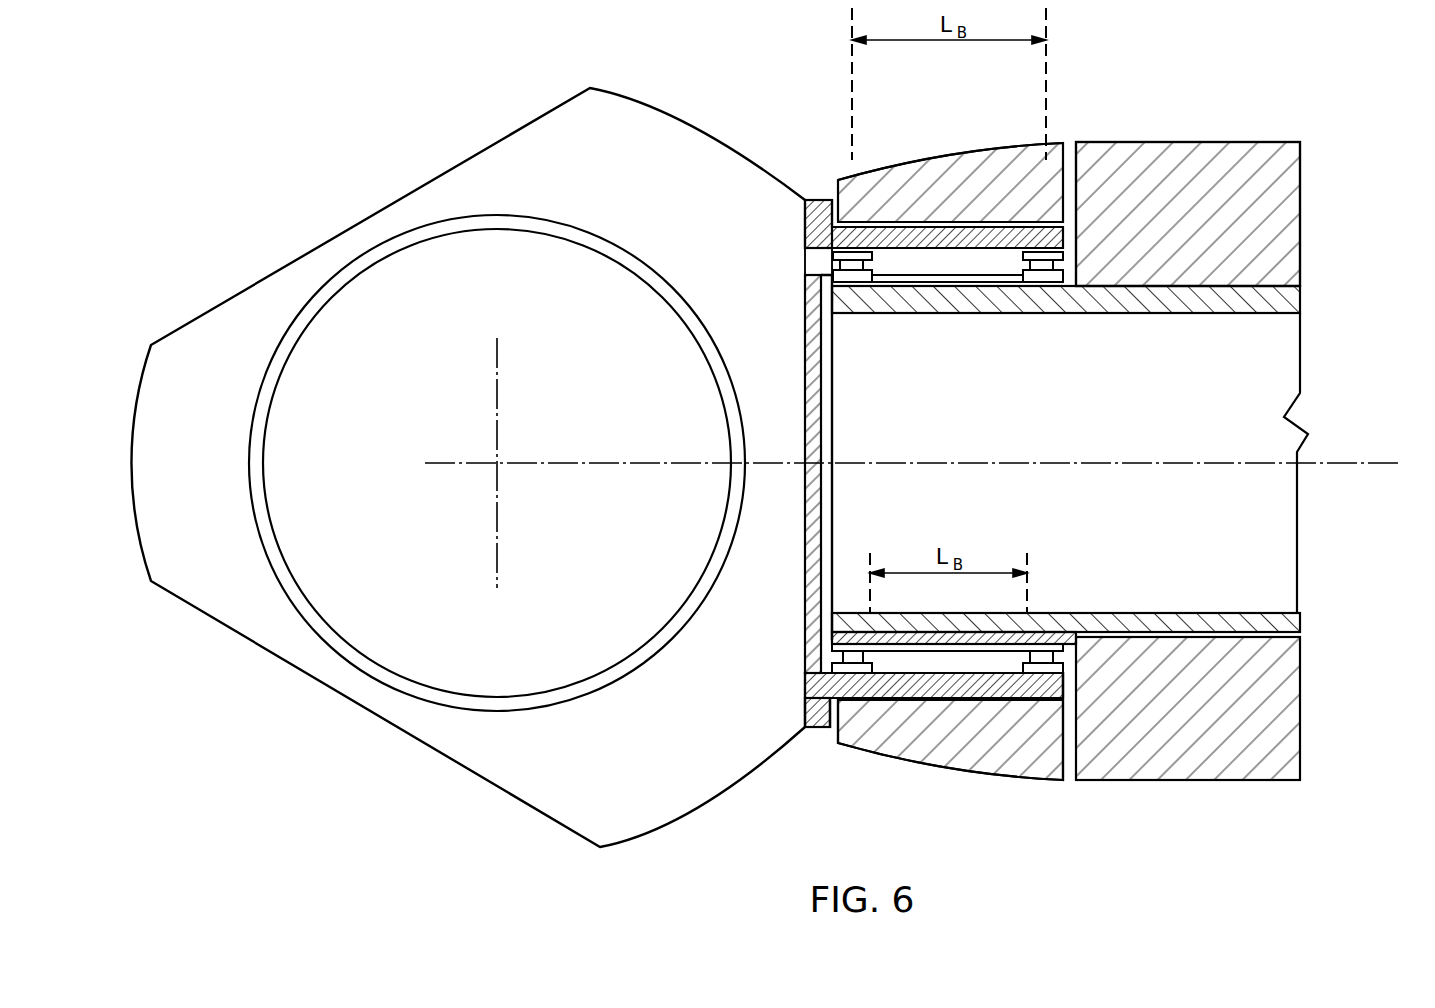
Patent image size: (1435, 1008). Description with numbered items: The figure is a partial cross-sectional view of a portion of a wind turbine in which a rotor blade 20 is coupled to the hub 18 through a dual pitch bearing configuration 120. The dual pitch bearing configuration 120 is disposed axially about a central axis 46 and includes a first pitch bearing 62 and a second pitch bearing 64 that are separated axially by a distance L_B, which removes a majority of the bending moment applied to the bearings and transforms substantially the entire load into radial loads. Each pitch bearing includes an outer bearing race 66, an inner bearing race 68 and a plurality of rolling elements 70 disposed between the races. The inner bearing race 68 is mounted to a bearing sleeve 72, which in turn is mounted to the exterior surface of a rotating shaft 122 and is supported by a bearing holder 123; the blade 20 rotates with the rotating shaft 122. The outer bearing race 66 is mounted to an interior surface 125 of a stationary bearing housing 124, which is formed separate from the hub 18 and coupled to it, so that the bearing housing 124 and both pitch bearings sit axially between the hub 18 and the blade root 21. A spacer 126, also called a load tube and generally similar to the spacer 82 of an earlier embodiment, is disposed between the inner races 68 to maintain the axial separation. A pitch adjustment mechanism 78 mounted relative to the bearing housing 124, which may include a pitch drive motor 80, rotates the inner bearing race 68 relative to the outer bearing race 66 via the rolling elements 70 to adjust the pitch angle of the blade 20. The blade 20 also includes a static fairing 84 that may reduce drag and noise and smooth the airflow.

The hub 18 is at (574, 100).
The rotor blade 20 is at (1250, 150).
The blade root 21 is at (1122, 160).
The central axis 46 is at (1392, 462).
The first pitch bearing 62 is at (855, 690).
The second pitch bearing 64 is at (1047, 697).
The outer bearing race 66 is at (852, 266).
The inner bearing race 68 is at (843, 650).
The rolling elements 70 is at (803, 242).
The bearing sleeve 72 is at (1058, 282).
The pitch adjustment mechanism 78 is at (800, 265).
The pitch drive motor 80 is at (818, 261).
The spacer 82 is at (897, 655).
The static fairing 84 is at (1005, 150).
The dual pitch bearing configuration 120 is at (953, 722).
The rotating shaft 122 is at (1300, 583).
The bearing holder 123 is at (823, 338).
The stationary bearing housing 124 is at (825, 200).
The interior surface 125 is at (907, 255).
The spacer 126 is at (960, 288).